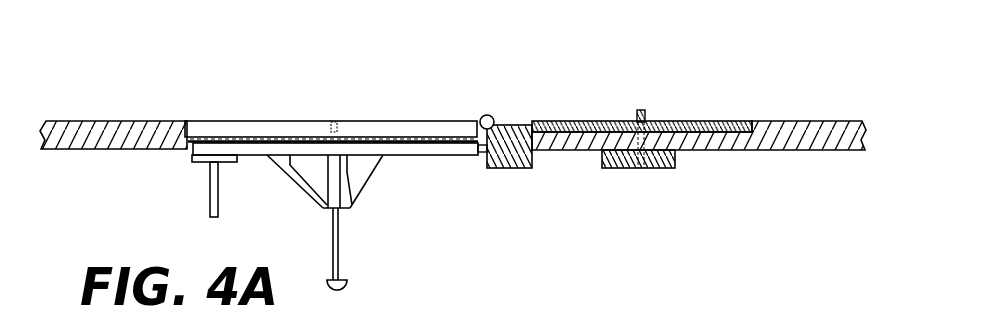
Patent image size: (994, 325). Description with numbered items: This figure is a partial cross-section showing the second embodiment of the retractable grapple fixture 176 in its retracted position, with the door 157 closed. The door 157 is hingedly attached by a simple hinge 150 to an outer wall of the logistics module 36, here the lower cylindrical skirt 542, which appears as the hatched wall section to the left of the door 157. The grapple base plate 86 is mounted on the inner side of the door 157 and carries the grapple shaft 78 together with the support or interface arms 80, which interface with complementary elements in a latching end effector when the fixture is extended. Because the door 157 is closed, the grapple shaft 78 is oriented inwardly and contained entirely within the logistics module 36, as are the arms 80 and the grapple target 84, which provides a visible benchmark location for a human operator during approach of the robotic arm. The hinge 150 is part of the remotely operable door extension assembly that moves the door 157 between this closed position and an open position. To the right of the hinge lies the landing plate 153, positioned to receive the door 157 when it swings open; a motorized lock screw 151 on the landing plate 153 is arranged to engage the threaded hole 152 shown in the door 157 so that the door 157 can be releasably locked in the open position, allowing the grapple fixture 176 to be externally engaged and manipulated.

The lower cylindrical skirt 542 is at (108, 122).
The retractable grapple fixture 176 is at (431, 71).
The door 157 is at (263, 125).
The threaded hole 152 is at (335, 122).
The base plate 86 is at (440, 157).
The grapple target 84 is at (210, 200).
The interface arms 80 is at (298, 190).
The grapple shaft 78 is at (340, 248).
The hinge 150 is at (493, 115).
The logistics module 36 is at (763, 104).
The landing plate 153 is at (603, 122).
The motorized lock screw 151 is at (644, 121).